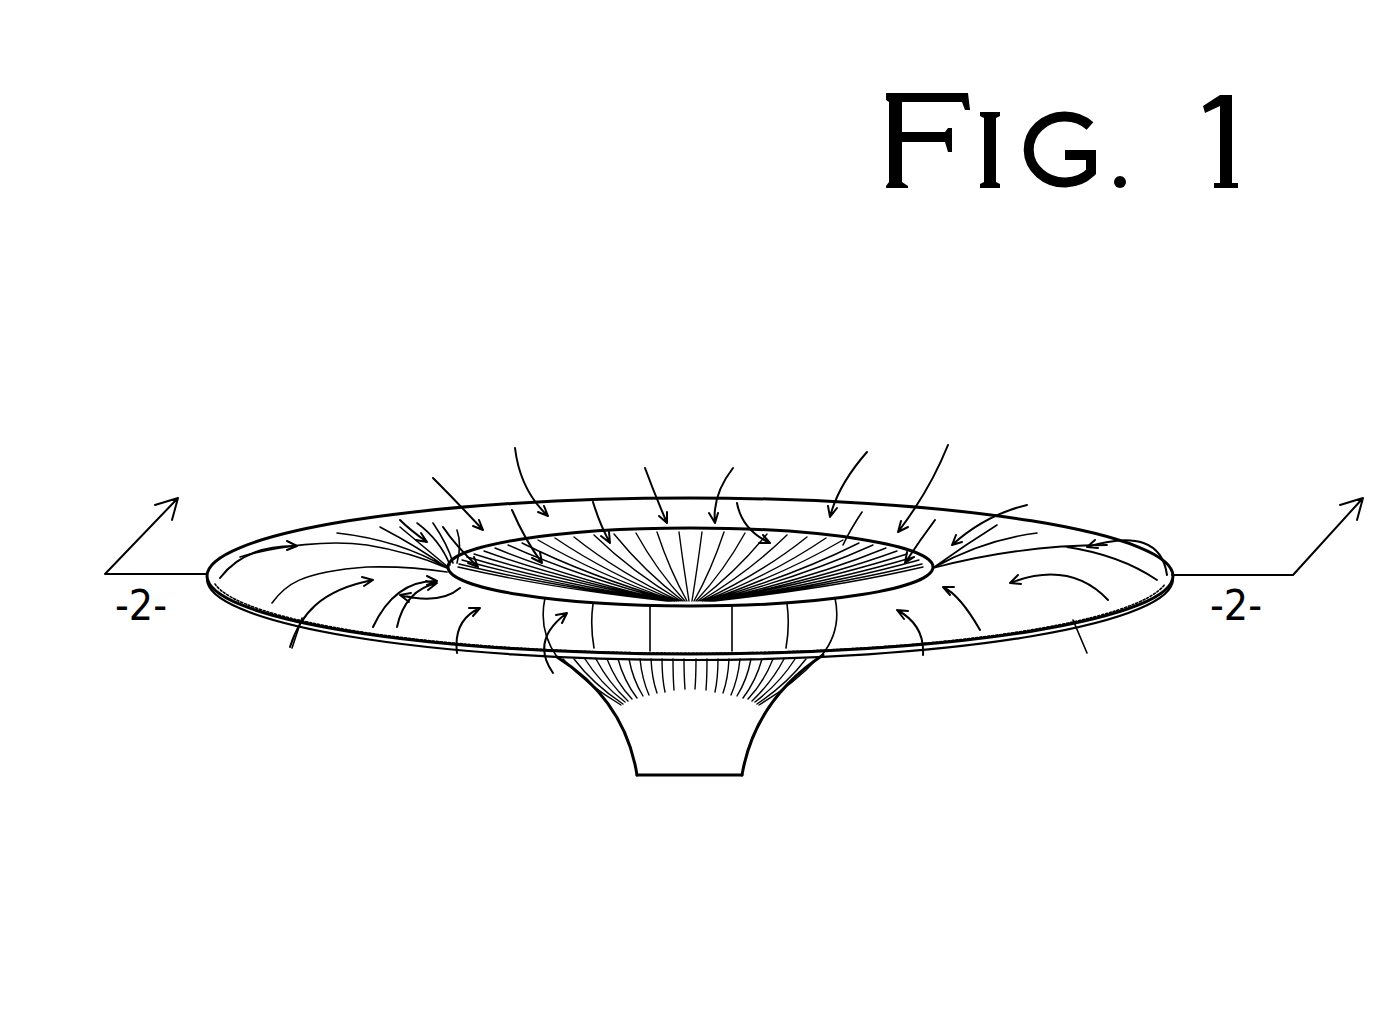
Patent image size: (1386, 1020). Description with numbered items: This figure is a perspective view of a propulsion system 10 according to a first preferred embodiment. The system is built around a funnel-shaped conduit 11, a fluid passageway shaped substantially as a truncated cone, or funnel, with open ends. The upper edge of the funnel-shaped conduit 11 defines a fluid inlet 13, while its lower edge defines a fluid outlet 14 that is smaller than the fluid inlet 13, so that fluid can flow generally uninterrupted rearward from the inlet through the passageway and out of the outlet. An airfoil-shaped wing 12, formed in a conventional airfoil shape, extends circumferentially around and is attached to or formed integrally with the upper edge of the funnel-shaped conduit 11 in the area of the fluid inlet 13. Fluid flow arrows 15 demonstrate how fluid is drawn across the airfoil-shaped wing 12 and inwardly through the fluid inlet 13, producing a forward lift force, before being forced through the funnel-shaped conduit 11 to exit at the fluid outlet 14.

The propulsion system 10 is at (520, 330).
The funnel-shaped conduit 11 is at (760, 720).
The airfoil-shaped wing 12 is at (1055, 542).
The fluid inlet 13 is at (737, 503).
The fluid outlet 14 is at (713, 777).
The fluid flow arrows 15 is at (460, 500).